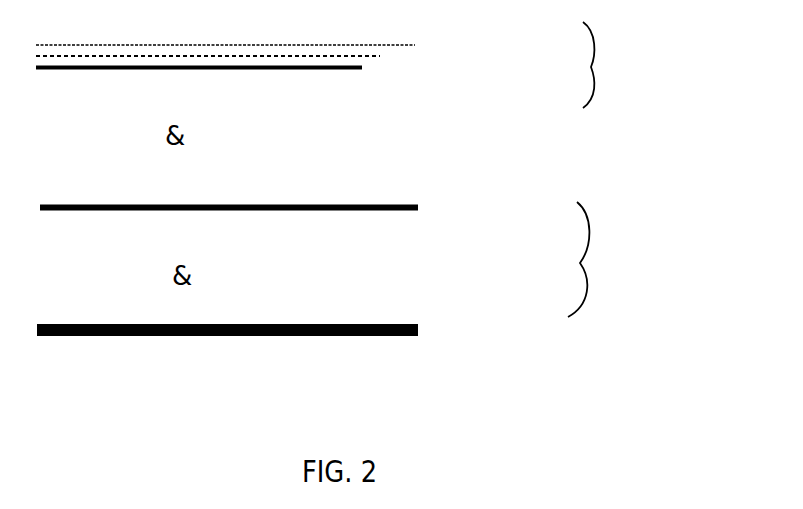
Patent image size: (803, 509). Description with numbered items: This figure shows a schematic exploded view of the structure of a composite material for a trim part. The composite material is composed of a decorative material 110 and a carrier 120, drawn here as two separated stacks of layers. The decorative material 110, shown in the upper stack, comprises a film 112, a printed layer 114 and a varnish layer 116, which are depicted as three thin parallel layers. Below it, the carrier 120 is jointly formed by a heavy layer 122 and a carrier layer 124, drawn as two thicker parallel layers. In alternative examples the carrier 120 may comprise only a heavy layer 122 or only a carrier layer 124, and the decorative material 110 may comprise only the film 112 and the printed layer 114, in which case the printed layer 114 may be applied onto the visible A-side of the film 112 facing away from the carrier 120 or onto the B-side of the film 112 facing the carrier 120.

The decorative material 110 is at (630, 65).
The film 112 is at (375, 72).
The printed layer 114 is at (400, 61).
The varnish layer 116 is at (429, 47).
The carrier 120 is at (614, 259).
The heavy layer 122 is at (438, 212).
The carrier layer 124 is at (437, 335).